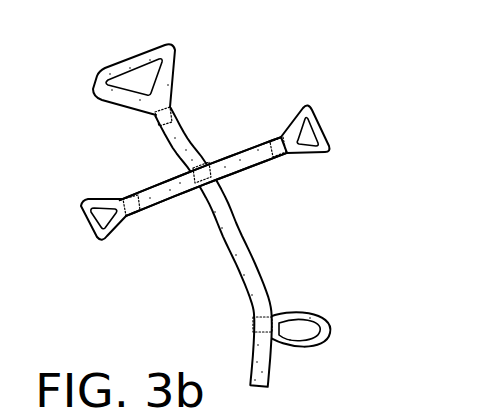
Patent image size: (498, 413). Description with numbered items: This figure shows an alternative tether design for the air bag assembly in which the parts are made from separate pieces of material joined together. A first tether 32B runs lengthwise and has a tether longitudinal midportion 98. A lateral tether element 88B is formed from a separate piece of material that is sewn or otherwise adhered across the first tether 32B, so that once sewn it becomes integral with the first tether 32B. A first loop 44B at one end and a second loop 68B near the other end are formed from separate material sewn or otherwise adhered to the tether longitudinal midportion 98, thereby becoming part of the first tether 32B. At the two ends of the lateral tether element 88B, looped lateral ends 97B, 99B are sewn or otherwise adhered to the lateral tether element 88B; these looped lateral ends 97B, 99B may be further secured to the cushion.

The first loop 44B is at (172, 60).
The looped lateral end 97B is at (322, 124).
The looped lateral end 99B is at (92, 199).
The lateral tether element 88B is at (243, 160).
The first tether 32B is at (246, 247).
The tether longitudinal midportion 98 is at (245, 260).
The second loop 68B is at (307, 316).